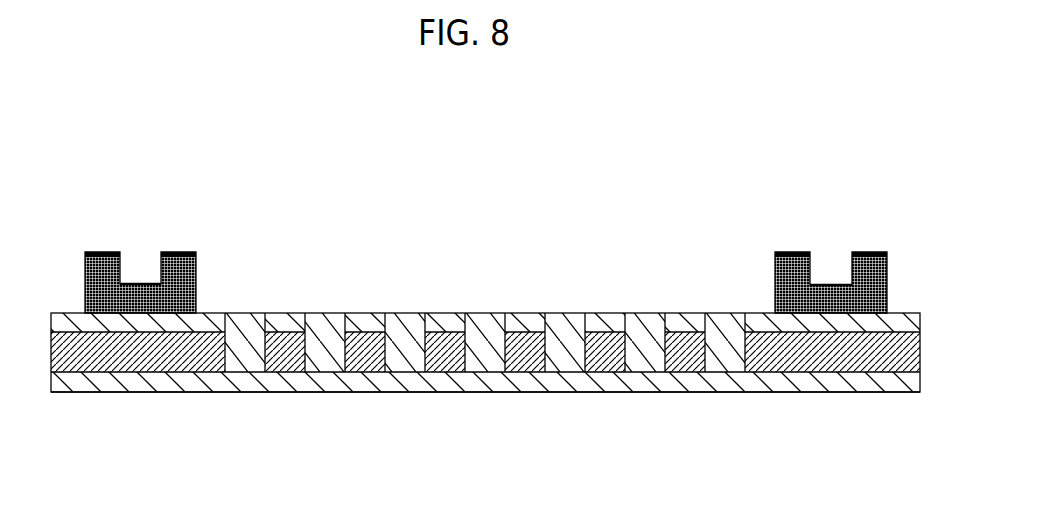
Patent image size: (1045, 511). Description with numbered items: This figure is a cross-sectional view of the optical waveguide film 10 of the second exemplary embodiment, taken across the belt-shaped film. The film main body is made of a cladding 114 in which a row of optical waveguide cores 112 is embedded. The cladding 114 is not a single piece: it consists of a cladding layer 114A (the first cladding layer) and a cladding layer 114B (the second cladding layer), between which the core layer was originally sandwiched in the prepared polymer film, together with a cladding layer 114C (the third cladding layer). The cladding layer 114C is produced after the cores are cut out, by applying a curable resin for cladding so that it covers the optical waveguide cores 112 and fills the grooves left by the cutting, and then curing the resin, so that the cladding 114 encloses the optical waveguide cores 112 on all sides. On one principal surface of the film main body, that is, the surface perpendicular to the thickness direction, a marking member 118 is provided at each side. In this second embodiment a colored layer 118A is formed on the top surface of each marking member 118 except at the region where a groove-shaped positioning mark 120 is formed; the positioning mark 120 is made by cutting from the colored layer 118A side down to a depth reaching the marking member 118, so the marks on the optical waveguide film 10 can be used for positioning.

The optical waveguide film 10 is at (752, 182).
The optical waveguide cores 112 is at (362, 373).
The cladding 114 is at (603, 240).
The cladding layer (first cladding layer) 114A is at (522, 383).
The cladding layer (second cladding layer) 114B is at (370, 318).
The cladding layer (third cladding layer) 114C is at (567, 318).
The marking member 118 is at (197, 273).
The colored layer 118A is at (180, 252).
The positioning mark 120 is at (140, 268).